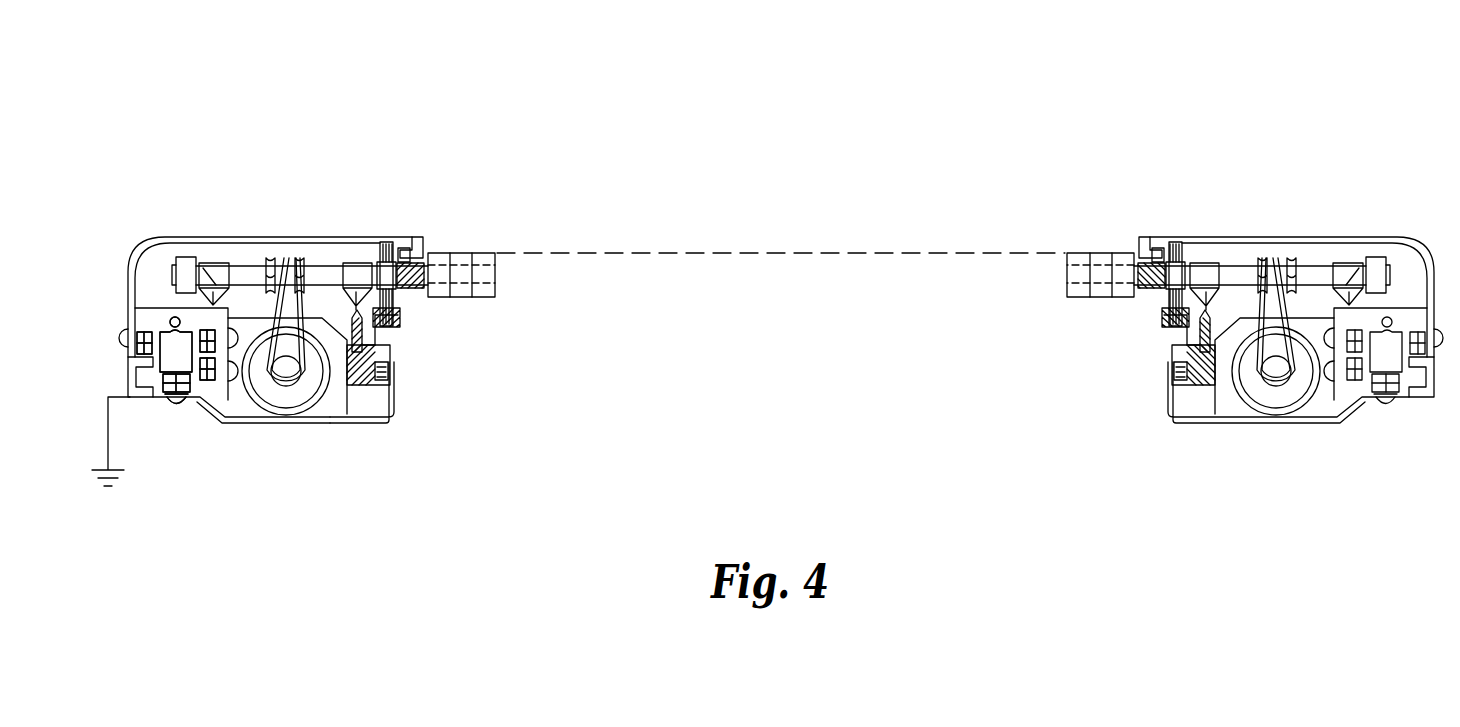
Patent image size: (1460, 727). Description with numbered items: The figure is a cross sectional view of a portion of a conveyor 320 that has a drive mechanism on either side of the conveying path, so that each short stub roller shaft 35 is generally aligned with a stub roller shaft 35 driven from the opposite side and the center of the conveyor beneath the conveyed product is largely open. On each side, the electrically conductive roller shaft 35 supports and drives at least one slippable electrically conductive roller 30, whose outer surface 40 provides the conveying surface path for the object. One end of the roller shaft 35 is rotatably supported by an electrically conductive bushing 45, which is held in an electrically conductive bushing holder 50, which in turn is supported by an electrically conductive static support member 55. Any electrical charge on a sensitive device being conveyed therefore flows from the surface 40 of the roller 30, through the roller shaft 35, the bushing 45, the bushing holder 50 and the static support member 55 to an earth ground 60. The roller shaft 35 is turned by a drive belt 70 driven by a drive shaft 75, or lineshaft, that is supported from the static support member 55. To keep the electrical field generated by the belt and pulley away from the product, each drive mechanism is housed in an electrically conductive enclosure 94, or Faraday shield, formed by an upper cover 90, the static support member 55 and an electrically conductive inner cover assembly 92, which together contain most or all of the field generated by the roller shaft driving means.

The conveyor 320 is at (666, 114).
The electrically conductive roller 30 is at (498, 293).
The electrically conductive roller shaft 35 is at (328, 272).
The outer surface 40 is at (487, 254).
The electrically conductive bushing 45 is at (190, 252).
The electrically conductive bushing holder 50 is at (213, 262).
The electrically conductive static support member 55 is at (130, 397).
The earth ground 60 is at (108, 448).
The drive belt 70 is at (305, 382).
The drive shaft 75 is at (281, 258).
The upper cover 90 is at (315, 240).
The electrically conductive inner cover assembly 92 is at (240, 418).
The electrically conductive enclosure 94 is at (393, 418).